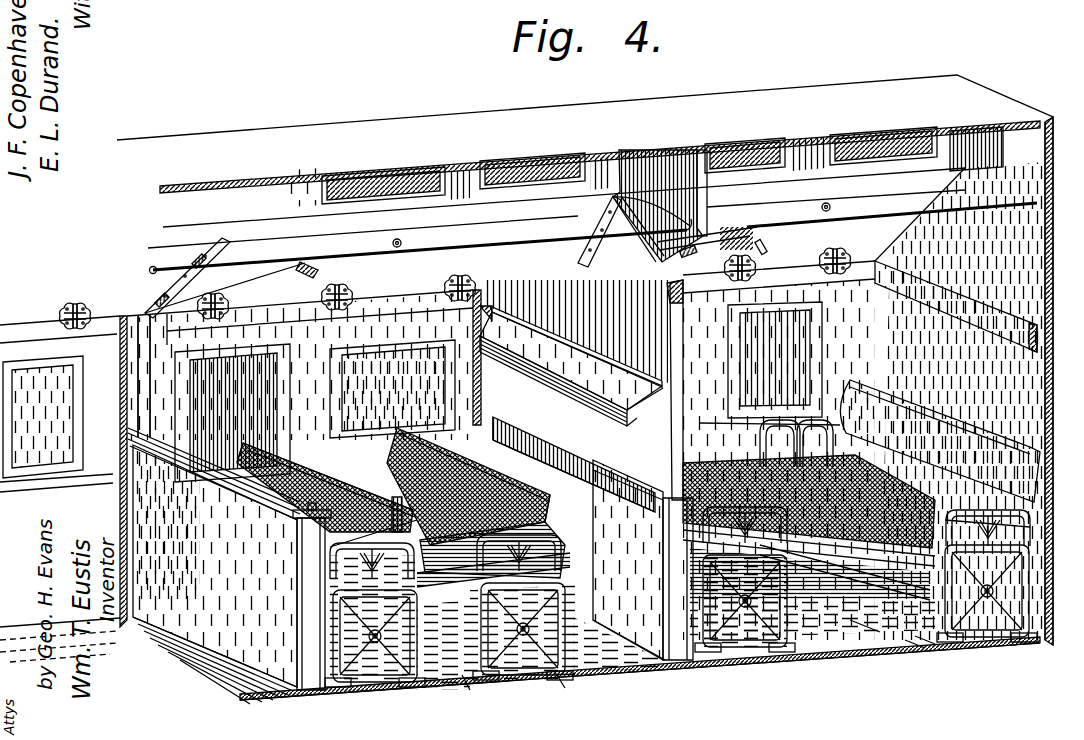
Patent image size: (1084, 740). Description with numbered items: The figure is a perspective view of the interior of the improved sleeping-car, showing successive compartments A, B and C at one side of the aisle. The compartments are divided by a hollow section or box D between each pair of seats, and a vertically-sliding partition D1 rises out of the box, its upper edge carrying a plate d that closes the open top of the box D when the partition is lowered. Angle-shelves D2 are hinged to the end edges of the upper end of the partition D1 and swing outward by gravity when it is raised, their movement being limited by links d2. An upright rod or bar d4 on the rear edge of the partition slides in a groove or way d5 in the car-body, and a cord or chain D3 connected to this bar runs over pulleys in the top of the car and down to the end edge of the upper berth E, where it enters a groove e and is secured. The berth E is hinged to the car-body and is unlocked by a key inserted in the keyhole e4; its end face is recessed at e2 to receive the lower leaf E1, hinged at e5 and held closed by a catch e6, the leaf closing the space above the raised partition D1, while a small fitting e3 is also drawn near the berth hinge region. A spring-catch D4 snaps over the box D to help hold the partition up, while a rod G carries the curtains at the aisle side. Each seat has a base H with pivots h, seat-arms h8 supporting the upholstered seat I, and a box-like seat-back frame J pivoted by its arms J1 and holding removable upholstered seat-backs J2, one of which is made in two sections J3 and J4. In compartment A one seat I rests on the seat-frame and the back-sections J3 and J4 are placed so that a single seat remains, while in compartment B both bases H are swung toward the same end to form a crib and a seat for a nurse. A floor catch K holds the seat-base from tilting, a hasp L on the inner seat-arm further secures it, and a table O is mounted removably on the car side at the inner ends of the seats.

The compartment A is at (810, 650).
The compartment B is at (452, 670).
The compartment C is at (215, 660).
The hollow section or box D is at (220, 612).
The vertically-sliding partition D1 is at (628, 428).
The angle-shelves D2 is at (690, 382).
The cord or chain D3 is at (258, 510).
The spring-catch D4 is at (665, 455).
The plate d is at (560, 365).
The links d2 is at (624, 402).
The upright rod or bar d4 is at (148, 362).
The groove or way d5 is at (472, 388).
The upper berth E is at (707, 245).
The lower leaf E1 is at (591, 251).
The groove e is at (687, 259).
The rabbet or recess e2 is at (707, 238).
The hinge plate e3 is at (736, 246).
The keyhole e4 is at (623, 224).
The hinge e5 is at (454, 278).
The catch e6 is at (303, 278).
The rod G is at (421, 246).
The base H is at (681, 616).
The pivots h is at (915, 645).
The arms h8 is at (1030, 527).
The upholstered seat I is at (632, 600).
The seat-back frame J is at (310, 455).
The arms J1 is at (800, 415).
The upholstered seat-backs J2 is at (693, 547).
The back-section J3 is at (648, 486).
The back-section J4 is at (653, 500).
The catch K is at (855, 622).
The hasp L is at (677, 500).
The table O is at (680, 499).